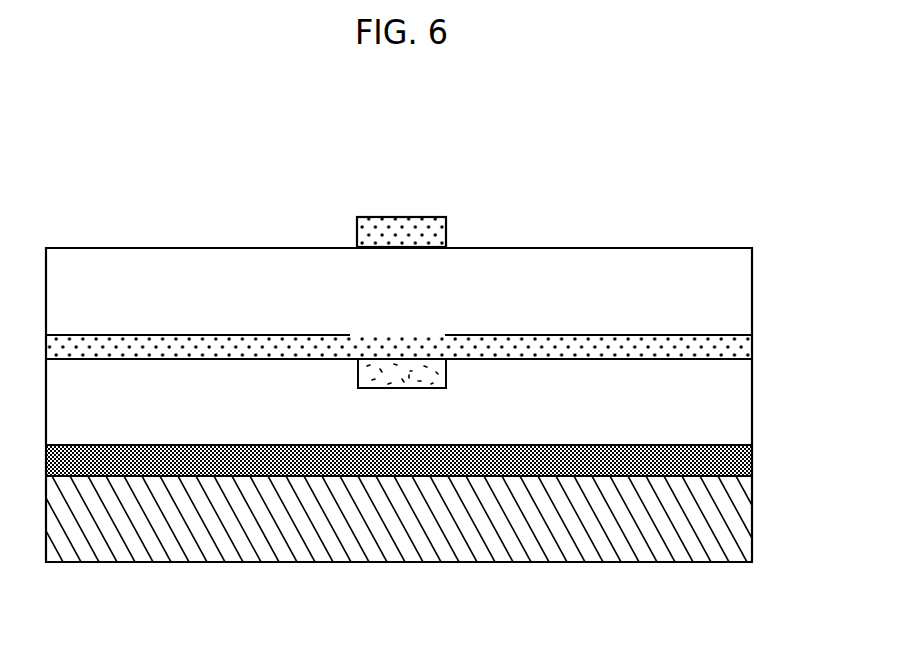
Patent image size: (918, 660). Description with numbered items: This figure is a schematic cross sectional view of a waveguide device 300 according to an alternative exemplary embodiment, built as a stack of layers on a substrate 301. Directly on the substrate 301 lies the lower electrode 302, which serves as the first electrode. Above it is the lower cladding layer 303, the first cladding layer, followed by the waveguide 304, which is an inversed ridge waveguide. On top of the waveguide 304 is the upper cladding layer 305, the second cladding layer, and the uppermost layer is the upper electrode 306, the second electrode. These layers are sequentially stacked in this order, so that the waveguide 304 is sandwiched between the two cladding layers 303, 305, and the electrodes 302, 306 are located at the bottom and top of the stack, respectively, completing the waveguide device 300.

The waveguide device 300 is at (263, 152).
The substrate 301 is at (738, 520).
The lower electrode 302 is at (752, 456).
The lower cladding layer 303 is at (740, 402).
The waveguide 304 is at (752, 348).
The upper cladding layer 305 is at (740, 290).
The upper electrode 306 is at (420, 217).